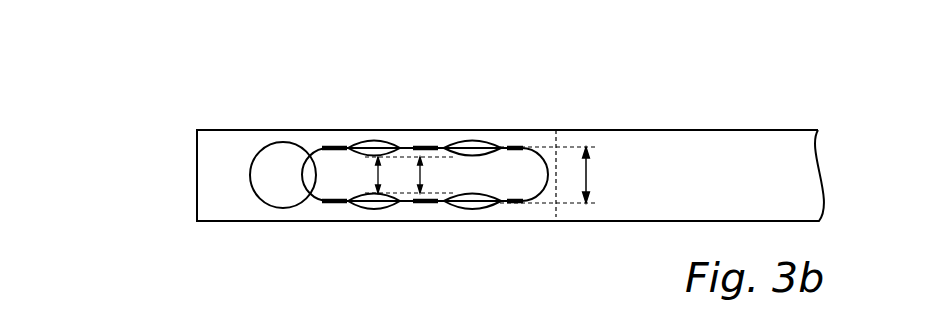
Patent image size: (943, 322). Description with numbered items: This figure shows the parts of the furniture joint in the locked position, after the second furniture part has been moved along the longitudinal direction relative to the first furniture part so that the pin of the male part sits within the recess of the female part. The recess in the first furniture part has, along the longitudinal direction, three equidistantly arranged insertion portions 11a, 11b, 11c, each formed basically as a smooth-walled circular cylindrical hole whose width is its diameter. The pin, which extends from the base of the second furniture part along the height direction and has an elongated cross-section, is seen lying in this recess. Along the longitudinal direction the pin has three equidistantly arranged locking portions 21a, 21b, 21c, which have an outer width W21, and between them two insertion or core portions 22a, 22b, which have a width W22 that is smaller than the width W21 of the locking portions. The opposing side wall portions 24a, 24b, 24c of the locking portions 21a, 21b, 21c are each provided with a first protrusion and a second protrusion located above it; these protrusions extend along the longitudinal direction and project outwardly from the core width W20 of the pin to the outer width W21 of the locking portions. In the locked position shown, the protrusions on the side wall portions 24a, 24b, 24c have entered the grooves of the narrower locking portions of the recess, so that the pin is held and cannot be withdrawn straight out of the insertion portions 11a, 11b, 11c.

The insertion portion 11a is at (280, 142).
The insertion portion 11b is at (470, 208).
The insertion portion 11c is at (373, 208).
The locking portion 21a is at (330, 165).
The locking portion 21b is at (522, 165).
The locking portion 21c is at (432, 165).
The core portion 22a is at (370, 170).
The core portion 22b is at (468, 173).
The side wall portion 24a is at (326, 147).
The side wall portion 24b is at (511, 147).
The side wall portion 24c is at (431, 147).
The core width W20 is at (420, 203).
The width of the locking portions W21 is at (617, 175).
The width of the core portions W22 is at (383, 147).